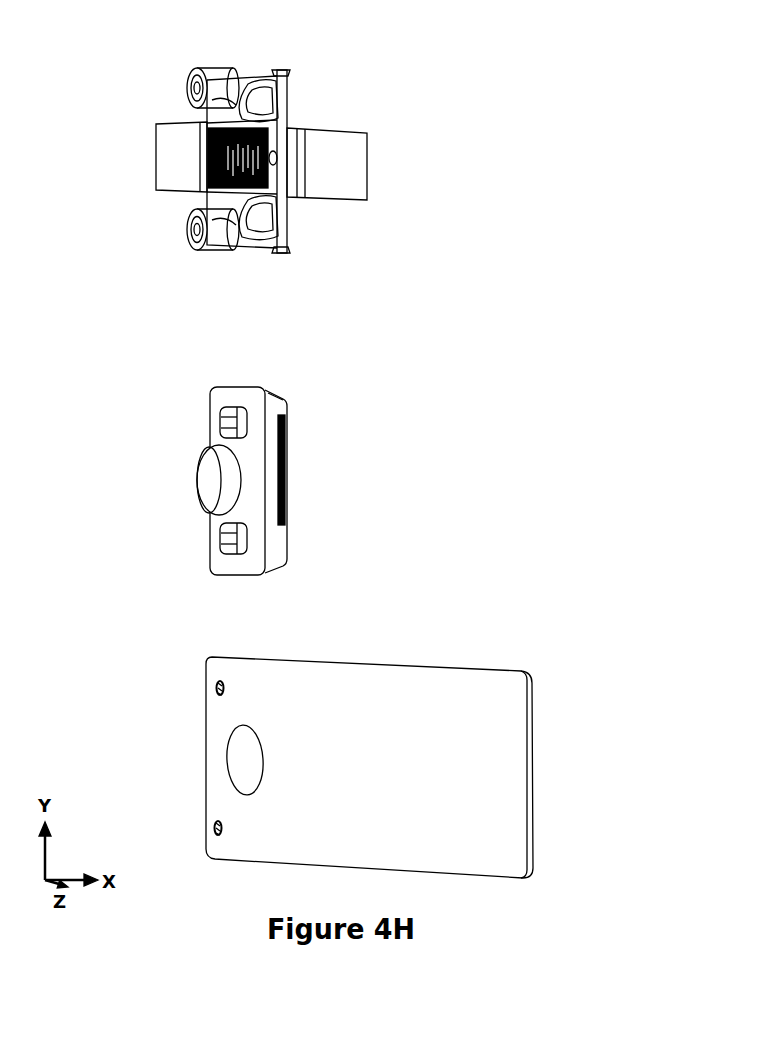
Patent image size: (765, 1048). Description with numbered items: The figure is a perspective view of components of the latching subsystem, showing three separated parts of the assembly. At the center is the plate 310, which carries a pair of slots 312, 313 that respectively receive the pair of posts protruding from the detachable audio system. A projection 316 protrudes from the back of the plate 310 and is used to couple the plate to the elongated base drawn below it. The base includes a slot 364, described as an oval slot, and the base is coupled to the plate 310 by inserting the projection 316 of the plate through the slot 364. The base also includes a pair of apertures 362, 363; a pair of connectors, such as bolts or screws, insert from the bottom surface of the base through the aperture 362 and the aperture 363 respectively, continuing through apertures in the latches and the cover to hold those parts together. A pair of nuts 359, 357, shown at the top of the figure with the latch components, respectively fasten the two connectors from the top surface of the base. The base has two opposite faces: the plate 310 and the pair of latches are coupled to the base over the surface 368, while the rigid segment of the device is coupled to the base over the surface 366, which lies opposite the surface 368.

The plate 310 is at (248, 479).
The slot 312 is at (244, 412).
The slot 313 is at (237, 548).
The projection 316 is at (212, 477).
The nut 357 is at (212, 248).
The nut 359 is at (208, 70).
The aperture 362 is at (225, 682).
The aperture 363 is at (212, 840).
The slot 364 is at (248, 783).
The surface 366 is at (500, 850).
The surface 368 is at (550, 834).